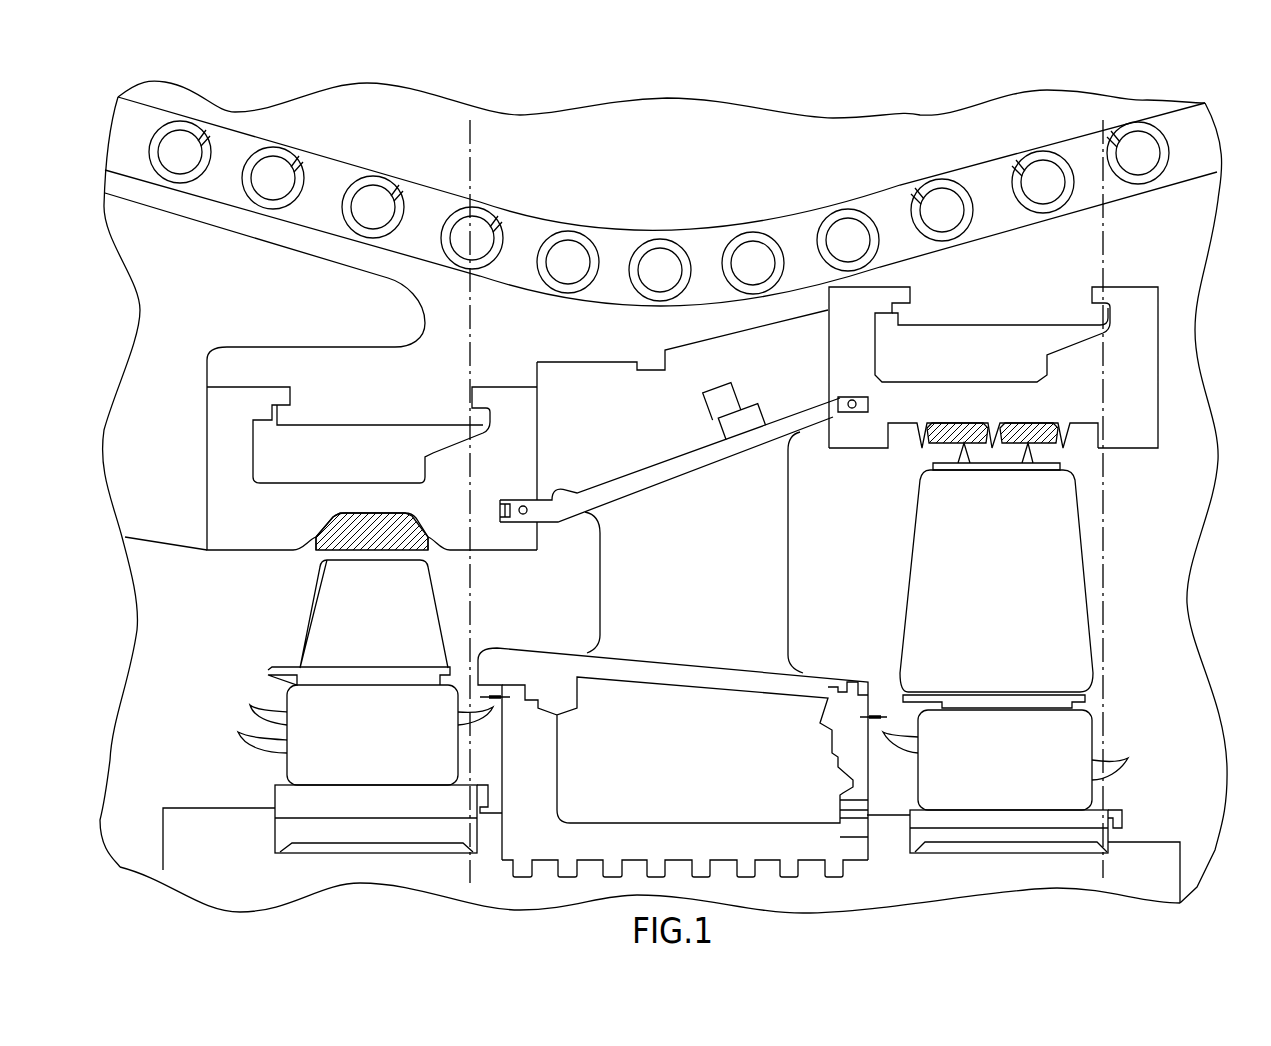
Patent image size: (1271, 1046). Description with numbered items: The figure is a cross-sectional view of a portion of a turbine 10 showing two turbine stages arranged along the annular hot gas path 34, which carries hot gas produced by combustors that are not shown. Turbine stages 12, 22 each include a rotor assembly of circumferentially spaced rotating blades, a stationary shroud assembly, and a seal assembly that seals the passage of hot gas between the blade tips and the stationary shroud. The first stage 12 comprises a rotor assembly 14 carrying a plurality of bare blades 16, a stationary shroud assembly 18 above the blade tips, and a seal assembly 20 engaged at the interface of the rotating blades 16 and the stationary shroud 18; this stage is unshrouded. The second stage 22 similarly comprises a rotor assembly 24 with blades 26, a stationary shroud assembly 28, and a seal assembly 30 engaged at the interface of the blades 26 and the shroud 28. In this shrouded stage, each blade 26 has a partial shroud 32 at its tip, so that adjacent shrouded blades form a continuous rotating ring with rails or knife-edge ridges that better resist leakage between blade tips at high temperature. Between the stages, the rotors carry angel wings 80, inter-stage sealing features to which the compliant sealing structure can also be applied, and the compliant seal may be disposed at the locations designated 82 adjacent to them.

The turbine 10 is at (783, 142).
The turbine stage 12 is at (178, 773).
The rotor assembly 14 is at (355, 749).
The blades 16 is at (300, 642).
The stationary shroud assembly 18 is at (207, 468).
The seal assembly 20 is at (313, 553).
The turbine stage 22 is at (1158, 794).
The rotor assembly 24 is at (990, 775).
The blades 26 is at (907, 607).
The stationary shroud assembly 28 is at (963, 412).
The seal assembly 30 is at (1048, 443).
The partial shroud 32 is at (932, 465).
The annular hot gas path 34 is at (558, 599).
The angel wings 80 is at (492, 723).
The compliant seal locations 82 is at (493, 683).